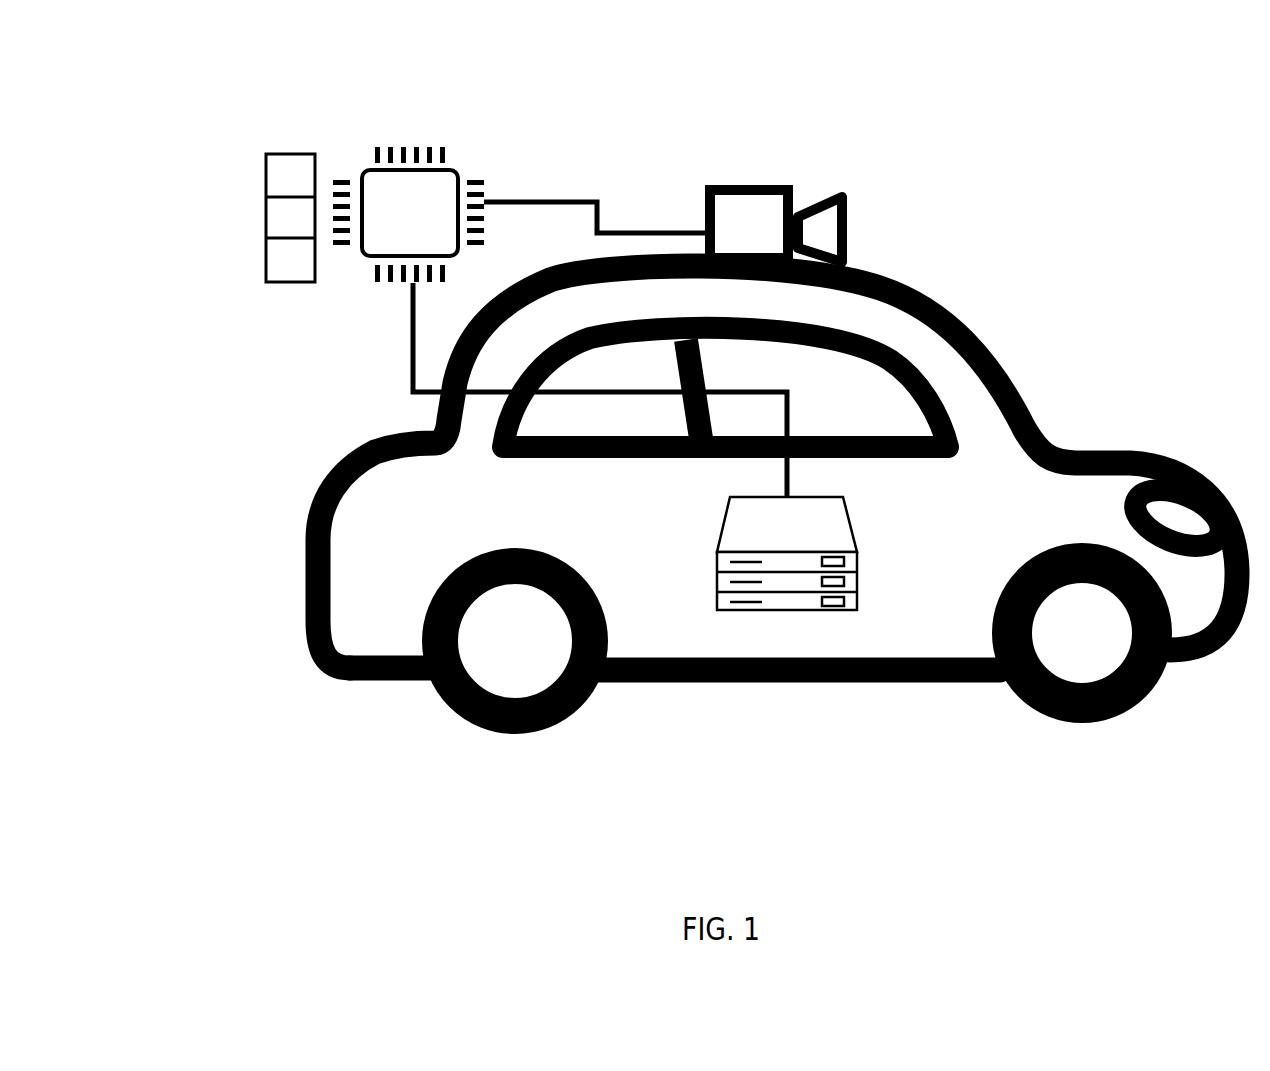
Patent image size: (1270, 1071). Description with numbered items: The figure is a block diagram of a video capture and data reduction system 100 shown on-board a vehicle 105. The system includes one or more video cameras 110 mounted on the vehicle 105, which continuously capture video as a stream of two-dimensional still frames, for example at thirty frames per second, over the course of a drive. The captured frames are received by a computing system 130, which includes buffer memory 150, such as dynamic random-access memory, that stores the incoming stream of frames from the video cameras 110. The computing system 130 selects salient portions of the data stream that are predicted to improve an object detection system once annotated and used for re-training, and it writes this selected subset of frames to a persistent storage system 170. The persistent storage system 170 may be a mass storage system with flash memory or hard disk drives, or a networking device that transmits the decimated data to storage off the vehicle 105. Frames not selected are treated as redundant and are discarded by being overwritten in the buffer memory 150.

The video capture and data reduction system 100 is at (168, 128).
The vehicle 105 is at (1014, 298).
The video cameras 110 is at (723, 188).
The computing system 130 is at (450, 180).
The buffer memory 150 is at (299, 153).
The persistent storage system 170 is at (766, 612).